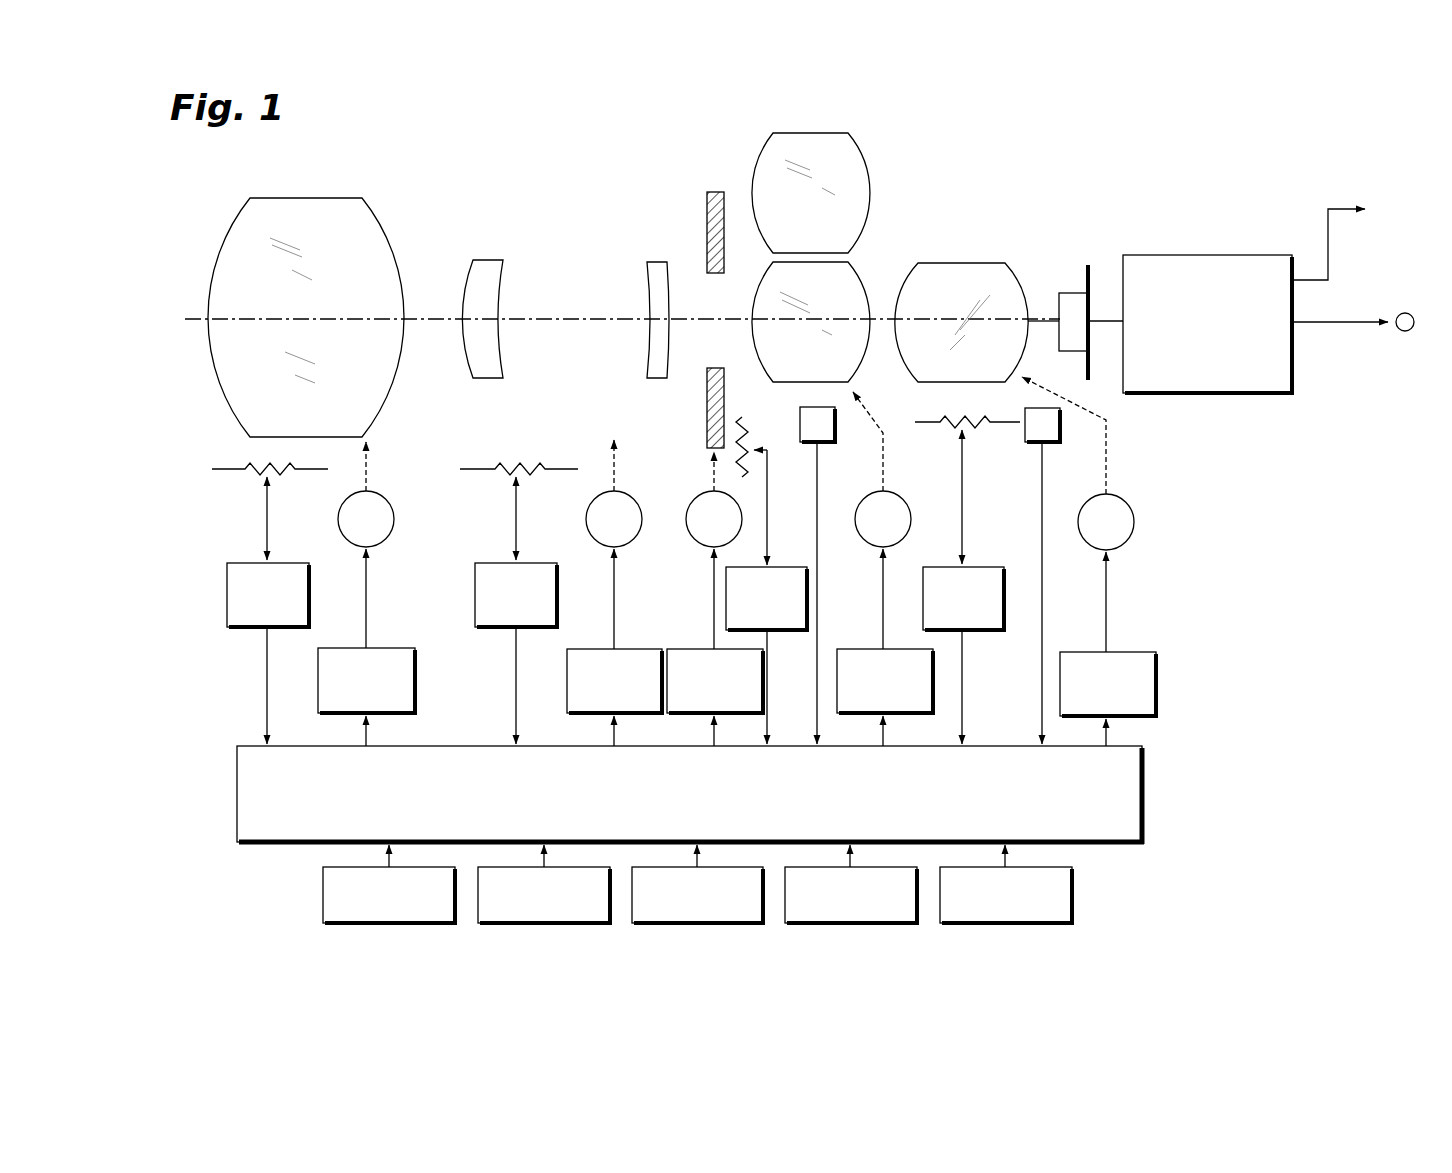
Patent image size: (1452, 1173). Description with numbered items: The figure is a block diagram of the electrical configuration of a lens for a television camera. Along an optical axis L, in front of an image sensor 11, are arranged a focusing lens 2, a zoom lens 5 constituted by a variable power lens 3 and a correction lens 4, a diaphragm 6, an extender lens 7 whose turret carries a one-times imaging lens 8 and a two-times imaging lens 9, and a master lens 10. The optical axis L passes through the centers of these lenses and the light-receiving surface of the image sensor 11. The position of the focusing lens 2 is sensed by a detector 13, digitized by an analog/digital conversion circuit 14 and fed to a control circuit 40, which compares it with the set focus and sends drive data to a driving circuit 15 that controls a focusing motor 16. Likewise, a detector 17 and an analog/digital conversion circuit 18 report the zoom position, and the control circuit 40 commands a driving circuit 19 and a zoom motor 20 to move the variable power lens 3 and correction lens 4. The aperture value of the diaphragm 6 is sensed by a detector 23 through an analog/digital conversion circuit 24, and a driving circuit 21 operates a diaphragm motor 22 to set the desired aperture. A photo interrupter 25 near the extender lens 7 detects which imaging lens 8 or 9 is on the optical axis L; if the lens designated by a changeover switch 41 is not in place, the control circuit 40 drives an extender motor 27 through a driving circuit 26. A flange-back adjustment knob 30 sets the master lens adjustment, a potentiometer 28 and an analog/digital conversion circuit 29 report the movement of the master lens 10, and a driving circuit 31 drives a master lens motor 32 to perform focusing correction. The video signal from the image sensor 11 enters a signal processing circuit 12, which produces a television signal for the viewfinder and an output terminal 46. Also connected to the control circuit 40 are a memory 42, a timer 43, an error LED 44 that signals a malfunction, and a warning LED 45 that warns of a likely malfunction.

The optical axis L is at (208, 319).
The focusing lens 2 is at (308, 198).
The variable power lens 3 is at (463, 285).
The correction lens 4 is at (648, 285).
The zoom lens 5 is at (545, 235).
The diaphragm 6 is at (707, 225).
The extender lens 7 is at (867, 122).
The imaging lens 8 is at (868, 298).
The imaging lens 9 is at (870, 198).
The master lens 10 is at (975, 263).
The image sensor 11 is at (1076, 293).
The signal processing circuit 12 is at (1195, 255).
The detector 13 is at (247, 472).
The analog/digital conversion circuit 14 is at (227, 600).
The driving circuit 15 is at (417, 677).
The focusing motor 16 is at (392, 498).
The detector 17 is at (483, 472).
The analog/digital conversion circuit 18 is at (475, 604).
The driving circuit 19 is at (593, 648).
The zoom motor 20 is at (634, 497).
The driving circuit 21 is at (695, 648).
The diaphragm motor 22 is at (700, 540).
The detector 23 is at (742, 425).
The analog/digital conversion circuit 24 is at (787, 565).
The photo interrupter 25 is at (837, 425).
The driving circuit 26 is at (893, 648).
The extender motor 27 is at (862, 540).
The potentiometer 28 is at (935, 425).
The analog/digital conversion circuit 29 is at (985, 565).
The flange-back adjustment knob 30 is at (1045, 443).
The driving circuit 31 is at (1158, 688).
The master lens motor 32 is at (1135, 522).
The control circuit 40 is at (1145, 812).
The changeover switch 41 is at (378, 926).
The memory 42 is at (533, 926).
The timer 43 is at (678, 926).
The error LED 44 is at (833, 926).
The warning LED 45 is at (990, 926).
The output terminal 46 is at (1405, 332).